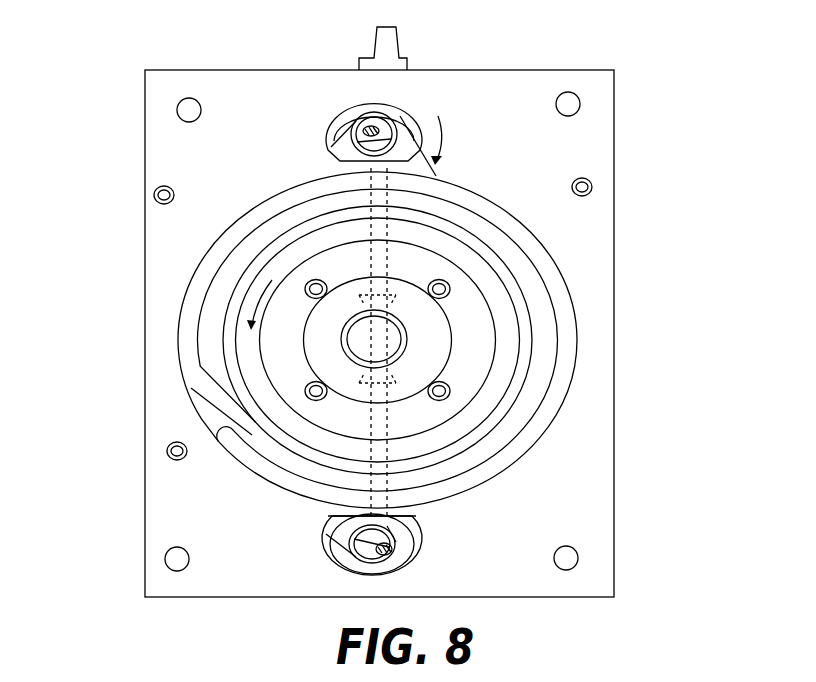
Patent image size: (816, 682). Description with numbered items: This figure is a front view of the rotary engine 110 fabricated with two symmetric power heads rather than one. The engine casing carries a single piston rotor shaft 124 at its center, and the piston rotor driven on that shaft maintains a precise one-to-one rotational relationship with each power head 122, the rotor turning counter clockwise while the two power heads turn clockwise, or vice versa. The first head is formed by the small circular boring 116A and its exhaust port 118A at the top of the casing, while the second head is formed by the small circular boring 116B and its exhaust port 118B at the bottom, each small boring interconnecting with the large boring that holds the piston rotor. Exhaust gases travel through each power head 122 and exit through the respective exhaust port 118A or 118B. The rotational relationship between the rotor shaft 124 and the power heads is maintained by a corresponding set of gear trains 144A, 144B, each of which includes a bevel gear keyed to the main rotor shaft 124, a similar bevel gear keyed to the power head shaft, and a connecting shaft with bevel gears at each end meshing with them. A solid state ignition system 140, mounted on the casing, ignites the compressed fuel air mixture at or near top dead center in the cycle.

The rotary engine 110 is at (679, 61).
The solid state ignition system 140 is at (392, 26).
The first head small circular boring 116A is at (330, 128).
The first head exhaust port 118A is at (381, 108).
The power head 122 is at (414, 150).
The first gear train 144A is at (378, 241).
The second gear train 144B is at (388, 456).
The piston rotor shaft 124 is at (374, 339).
The second head small circular boring 116B is at (318, 536).
The second head exhaust port 118B is at (393, 516).